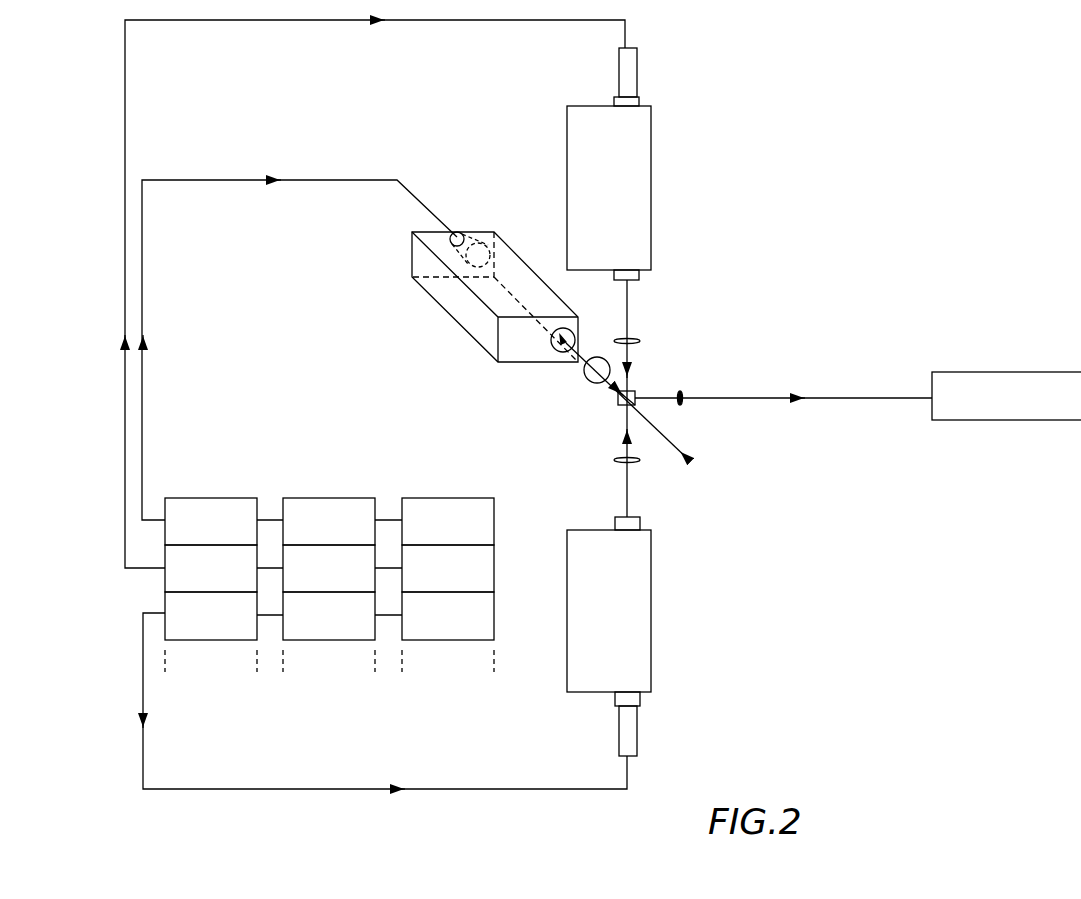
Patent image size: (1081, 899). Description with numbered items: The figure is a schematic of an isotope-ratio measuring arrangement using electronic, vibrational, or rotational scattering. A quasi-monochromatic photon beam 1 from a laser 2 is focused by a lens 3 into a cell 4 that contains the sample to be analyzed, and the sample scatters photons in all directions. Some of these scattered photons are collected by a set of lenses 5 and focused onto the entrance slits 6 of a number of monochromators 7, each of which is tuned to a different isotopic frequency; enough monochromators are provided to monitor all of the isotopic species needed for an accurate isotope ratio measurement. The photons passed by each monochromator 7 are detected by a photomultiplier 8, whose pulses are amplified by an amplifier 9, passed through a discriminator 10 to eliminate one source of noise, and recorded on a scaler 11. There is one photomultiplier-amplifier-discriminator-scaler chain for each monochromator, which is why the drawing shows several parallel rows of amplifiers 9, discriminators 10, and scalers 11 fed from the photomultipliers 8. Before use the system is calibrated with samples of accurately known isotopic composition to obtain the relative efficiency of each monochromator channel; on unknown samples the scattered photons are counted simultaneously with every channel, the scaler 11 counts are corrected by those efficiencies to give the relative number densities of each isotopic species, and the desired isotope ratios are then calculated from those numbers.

The photon beam 1 is at (905, 397).
The laser 2 is at (1062, 372).
The lens 3 is at (682, 392).
The cell 4 is at (635, 393).
The set of lenses 5 is at (640, 341).
The entrance slits 6 is at (637, 280).
The monochromators 7 is at (651, 152).
The photomultiplier 8 is at (637, 78).
The amplifier 9 is at (165, 548).
The discriminator 10 is at (283, 512).
The scaler 11 is at (494, 515).